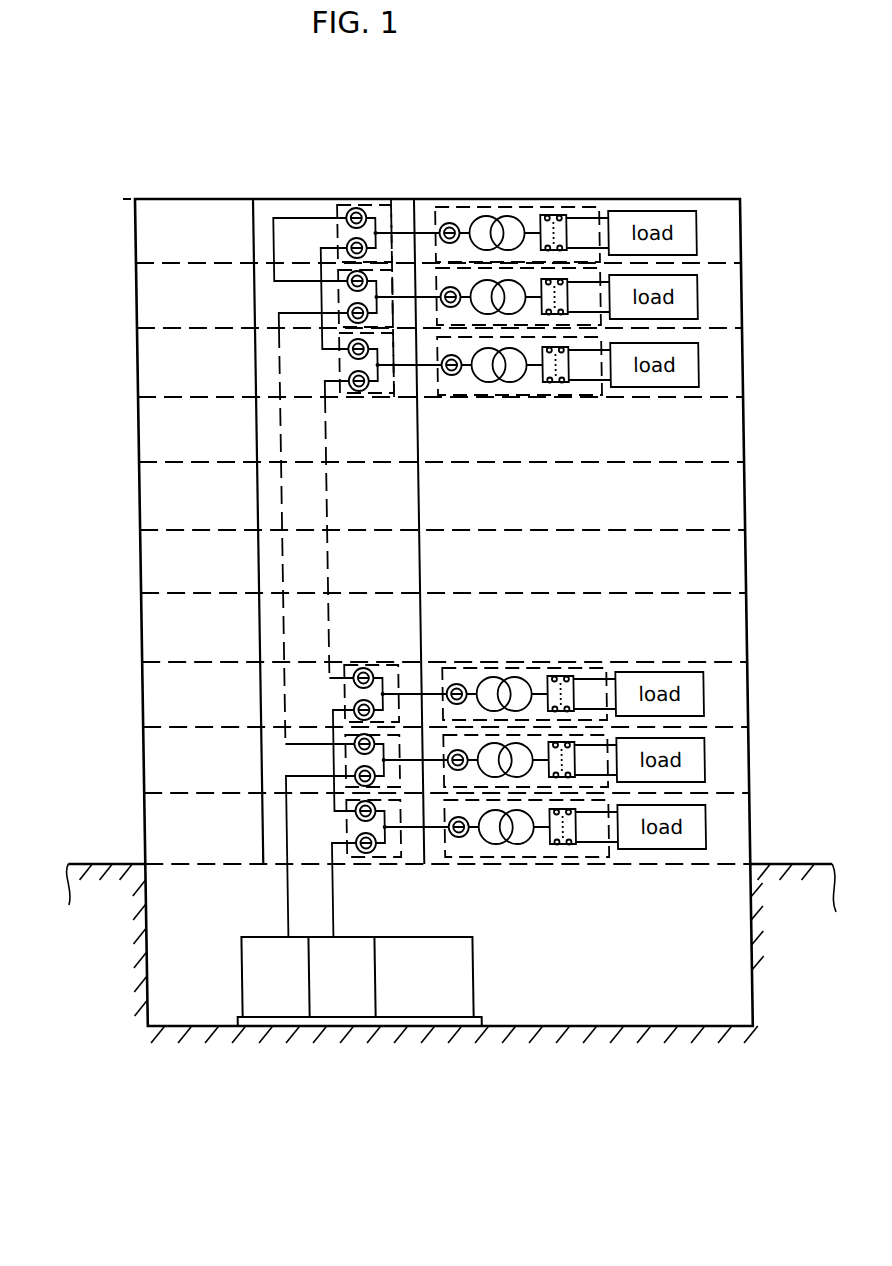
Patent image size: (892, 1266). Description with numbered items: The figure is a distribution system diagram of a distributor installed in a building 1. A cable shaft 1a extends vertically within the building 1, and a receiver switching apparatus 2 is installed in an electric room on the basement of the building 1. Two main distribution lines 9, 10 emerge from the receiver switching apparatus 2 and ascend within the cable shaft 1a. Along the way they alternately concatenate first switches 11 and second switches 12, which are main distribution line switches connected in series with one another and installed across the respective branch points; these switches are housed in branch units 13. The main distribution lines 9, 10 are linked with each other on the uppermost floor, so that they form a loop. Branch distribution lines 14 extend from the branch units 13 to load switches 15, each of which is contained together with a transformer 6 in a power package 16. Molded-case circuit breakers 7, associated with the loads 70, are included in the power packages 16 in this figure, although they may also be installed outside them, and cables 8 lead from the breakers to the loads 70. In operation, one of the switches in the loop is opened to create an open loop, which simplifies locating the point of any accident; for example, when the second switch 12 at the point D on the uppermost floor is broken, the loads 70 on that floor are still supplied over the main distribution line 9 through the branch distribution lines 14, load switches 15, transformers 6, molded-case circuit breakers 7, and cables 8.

The building 1 is at (742, 299).
The cable shaft 1a is at (253, 236).
The receiver switching apparatus 2 is at (461, 990).
The transformers 6 is at (497, 215).
The molded-case circuit breakers 7 is at (552, 214).
The cables 8 is at (581, 217).
The main distribution line 9 is at (322, 493).
The main distribution line 10 is at (278, 517).
The first switches 11 is at (347, 247).
The second switches 12 is at (351, 210).
The branch units 13 is at (391, 206).
The branch distribution lines 14 is at (416, 228).
The load switches 15 is at (454, 222).
The power packages 16 is at (436, 228).
The loads 70 is at (643, 211).
The point D is at (369, 205).